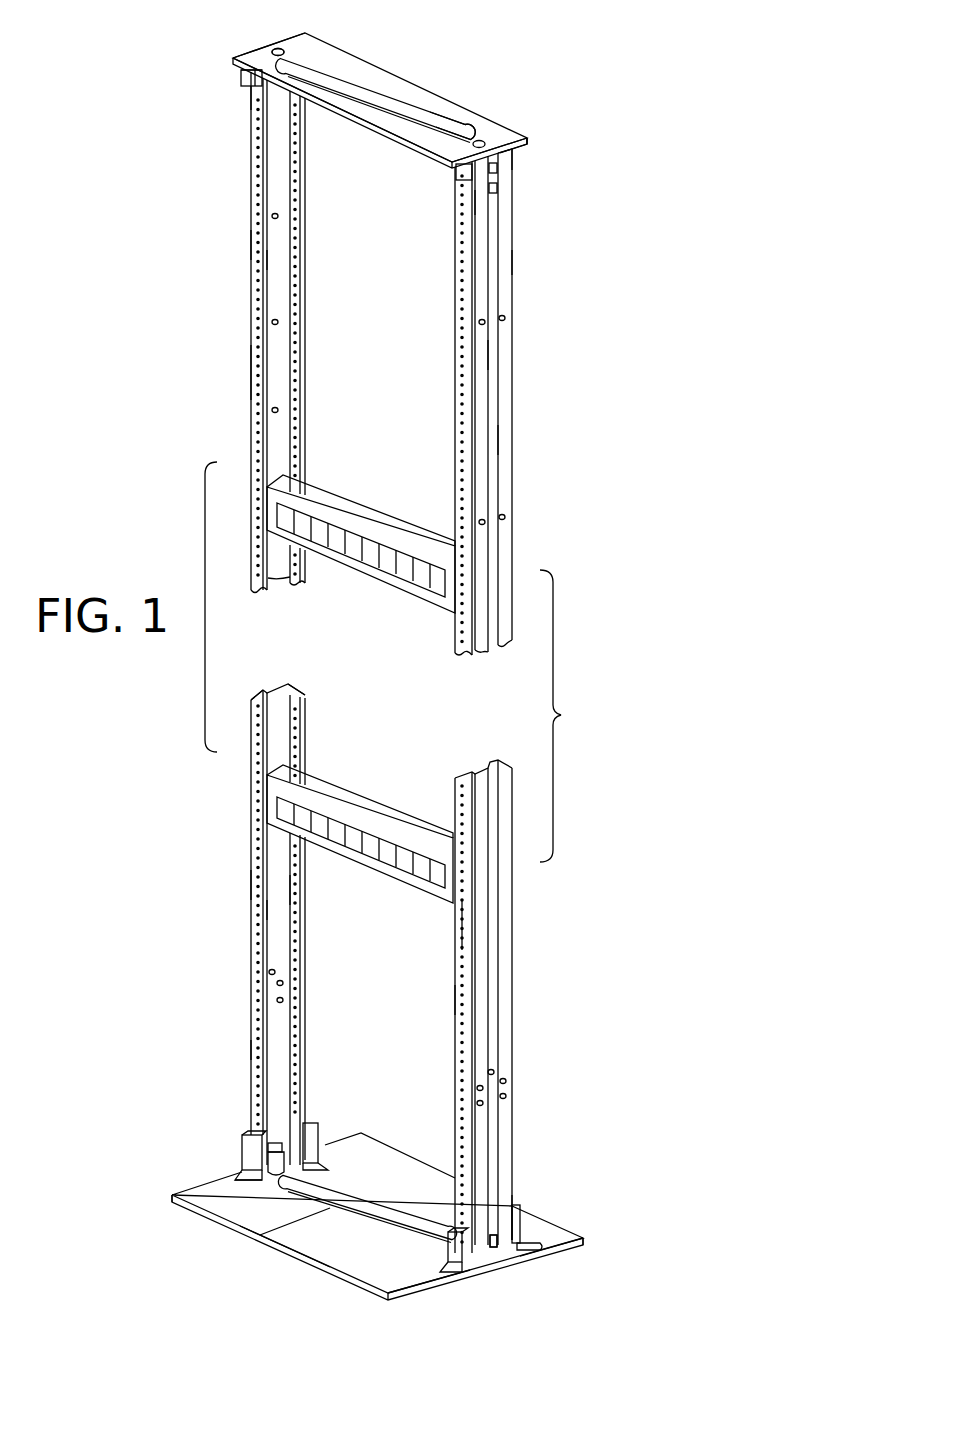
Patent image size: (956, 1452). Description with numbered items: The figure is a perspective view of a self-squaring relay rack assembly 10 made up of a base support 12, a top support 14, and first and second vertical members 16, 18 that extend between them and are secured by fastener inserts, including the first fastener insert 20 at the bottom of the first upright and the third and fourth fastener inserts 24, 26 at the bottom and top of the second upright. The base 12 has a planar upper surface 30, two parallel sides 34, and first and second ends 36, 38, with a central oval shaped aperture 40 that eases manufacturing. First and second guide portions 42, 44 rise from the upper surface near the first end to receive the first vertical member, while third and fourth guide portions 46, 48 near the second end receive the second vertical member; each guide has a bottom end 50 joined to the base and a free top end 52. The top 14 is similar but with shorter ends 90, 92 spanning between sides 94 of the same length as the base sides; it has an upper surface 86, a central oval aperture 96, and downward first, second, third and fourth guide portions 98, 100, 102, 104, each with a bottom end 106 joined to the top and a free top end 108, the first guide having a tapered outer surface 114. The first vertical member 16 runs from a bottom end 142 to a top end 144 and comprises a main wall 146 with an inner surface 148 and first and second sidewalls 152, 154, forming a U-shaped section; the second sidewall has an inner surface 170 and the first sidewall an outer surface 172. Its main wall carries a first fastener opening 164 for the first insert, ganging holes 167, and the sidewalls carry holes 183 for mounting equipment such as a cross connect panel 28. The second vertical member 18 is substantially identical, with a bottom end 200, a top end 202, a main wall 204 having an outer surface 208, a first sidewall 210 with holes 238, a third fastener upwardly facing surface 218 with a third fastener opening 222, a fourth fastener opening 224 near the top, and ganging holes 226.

The self-squaring relay rack assembly 10 is at (612, 73).
The base support 12 is at (378, 1192).
The top support 14 is at (408, 98).
The first vertical member 16 is at (249, 320).
The second vertical member 18 is at (517, 295).
The first fastener insert 20 is at (240, 1227).
The third fastener insert 24 is at (521, 1262).
The fourth fastener insert 26 is at (484, 198).
The cross connect panel 28 is at (369, 800).
The upper surface 30 is at (283, 1223).
The sides 34 is at (293, 1255).
The first end 36 is at (172, 1195).
The second end 38 is at (427, 1285).
The central oval shaped aperture 40 is at (353, 1188).
The first guide portion 42 is at (241, 1147).
The second guide portion 44 is at (312, 1127).
The third guide portion 46 is at (445, 1247).
The fourth guide portion 48 is at (586, 1237).
The bottom end 50 is at (235, 1178).
The top end 52 is at (270, 1143).
The upper surface 86 is at (345, 58).
The first end 90 is at (250, 60).
The second end 92 is at (532, 130).
The sides 94 is at (407, 72).
The central oval shaped aperture 96 is at (432, 90).
The first guide portion 98 is at (243, 80).
The second guide portion 100 is at (298, 58).
The third guide portion 102 is at (450, 176).
The fourth guide portion 104 is at (516, 166).
The bottom end 106 is at (522, 152).
The top end 108 is at (250, 86).
The outer surface 114 is at (243, 78).
The bottom end 142 is at (251, 998).
The top end 144 is at (251, 238).
The main wall 146 is at (279, 260).
The inner surface 148 is at (282, 440).
The first sidewall 152 is at (251, 887).
The second sidewall 154 is at (292, 890).
The first fastener opening 164 is at (257, 1047).
The ganging holes 167 is at (280, 980).
The inner surface 170 is at (291, 725).
The outer surface 172 is at (251, 787).
The holes 183 is at (257, 395).
The bottom end 200 is at (513, 1110).
The top end 202 is at (514, 262).
The main wall 204 is at (495, 354).
The outer surface 208 is at (496, 440).
The first sidewall 210 is at (455, 1002).
The third fastener upwardly facing surface 218 is at (514, 1207).
The third fastener opening 222 is at (494, 1248).
The fourth fastener opening 224 is at (492, 182).
The ganging holes 226 is at (484, 522).
The holes 238 is at (466, 944).